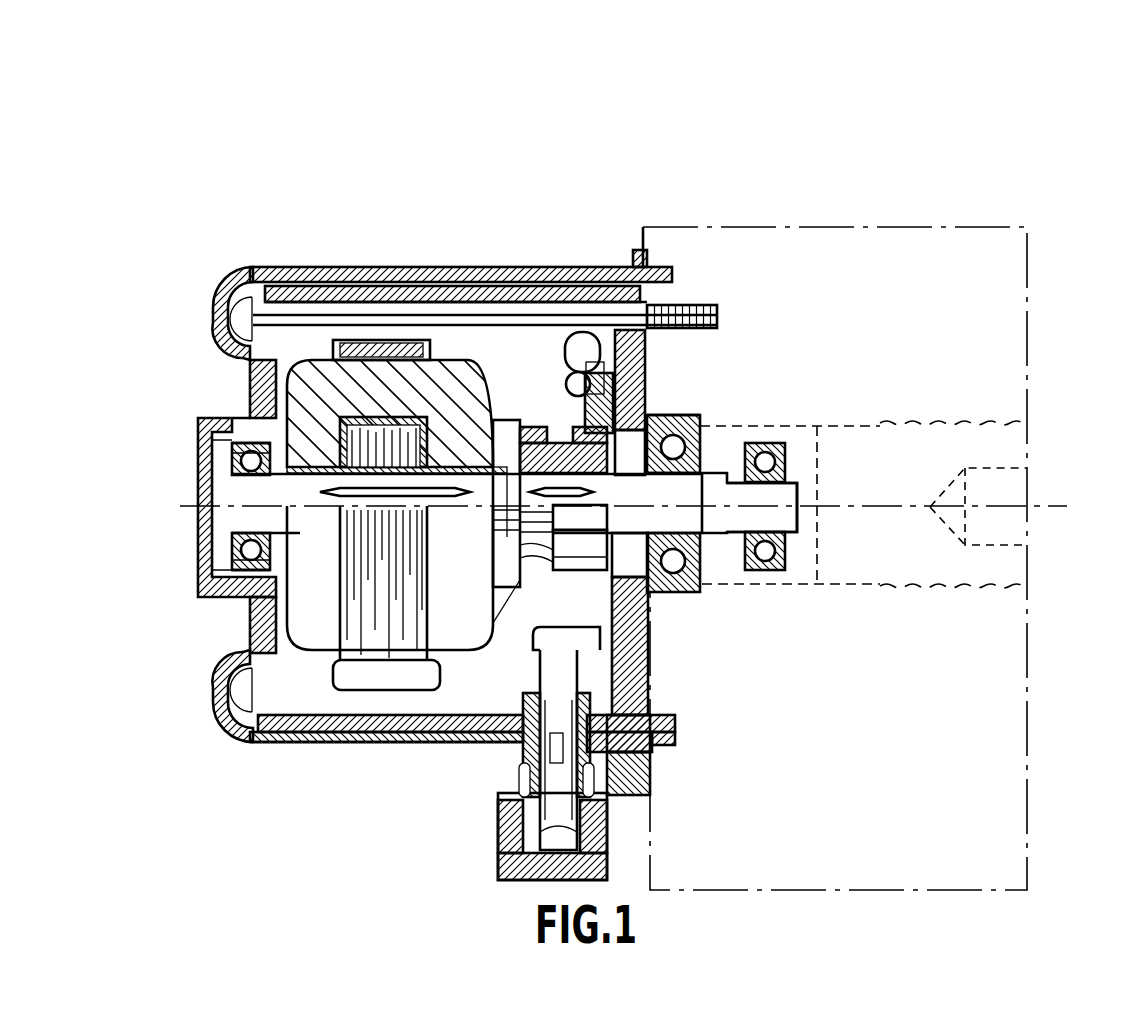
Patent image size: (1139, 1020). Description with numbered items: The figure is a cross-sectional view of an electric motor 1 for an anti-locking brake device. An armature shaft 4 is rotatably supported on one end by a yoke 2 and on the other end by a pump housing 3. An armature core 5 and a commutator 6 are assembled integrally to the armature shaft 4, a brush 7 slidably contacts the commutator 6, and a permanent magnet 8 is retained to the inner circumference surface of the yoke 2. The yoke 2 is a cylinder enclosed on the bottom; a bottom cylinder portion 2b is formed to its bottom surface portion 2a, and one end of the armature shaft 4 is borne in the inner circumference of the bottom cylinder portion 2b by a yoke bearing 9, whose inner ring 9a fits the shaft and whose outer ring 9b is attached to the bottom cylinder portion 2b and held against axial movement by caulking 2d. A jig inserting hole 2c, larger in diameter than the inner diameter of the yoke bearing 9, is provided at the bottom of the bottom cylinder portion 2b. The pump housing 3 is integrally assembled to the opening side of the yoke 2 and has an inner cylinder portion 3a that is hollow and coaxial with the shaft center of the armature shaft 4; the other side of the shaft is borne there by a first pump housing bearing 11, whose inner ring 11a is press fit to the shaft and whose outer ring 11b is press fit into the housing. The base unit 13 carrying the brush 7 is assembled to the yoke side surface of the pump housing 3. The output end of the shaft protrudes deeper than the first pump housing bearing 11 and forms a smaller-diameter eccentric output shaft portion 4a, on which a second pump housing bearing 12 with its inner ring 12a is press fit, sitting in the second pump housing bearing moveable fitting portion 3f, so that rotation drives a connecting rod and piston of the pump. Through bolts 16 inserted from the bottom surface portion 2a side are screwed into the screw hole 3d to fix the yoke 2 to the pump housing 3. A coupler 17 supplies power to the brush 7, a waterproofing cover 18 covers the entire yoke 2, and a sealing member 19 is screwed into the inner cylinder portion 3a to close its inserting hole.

The electric motor 1 is at (298, 242).
The yoke 2 is at (480, 290).
The bottom surface portion 2a is at (267, 653).
The bottom cylinder portion 2b is at (215, 598).
The jig inserting hole 2c is at (228, 551).
The caulking 2d is at (280, 430).
The pump housing 3 is at (961, 268).
The inner cylinder portion 3a is at (720, 565).
The screw hole 3d is at (697, 312).
The second pump housing bearing moveable fitting portion 3f is at (737, 550).
The armature shaft 4 is at (488, 495).
The eccentric output shaft portion 4a is at (798, 482).
The armature core 5 is at (262, 695).
The commutator 6 is at (577, 550).
The brush 7 is at (597, 412).
The permanent magnet 8 is at (373, 680).
The yoke bearing 9 is at (224, 431).
The inner ring 9a is at (233, 467).
The outer ring 9b is at (248, 450).
The first pump housing bearing 11 is at (683, 592).
The inner ring 11a is at (662, 520).
The outer ring 11b is at (657, 612).
The second pump housing bearing 12 is at (788, 488).
The inner ring 12a is at (752, 446).
The base unit 13 is at (630, 365).
The through bolts 16 is at (425, 300).
The coupler 17 is at (552, 822).
The waterproofing cover 18 is at (417, 740).
The sealing member 19 is at (998, 450).